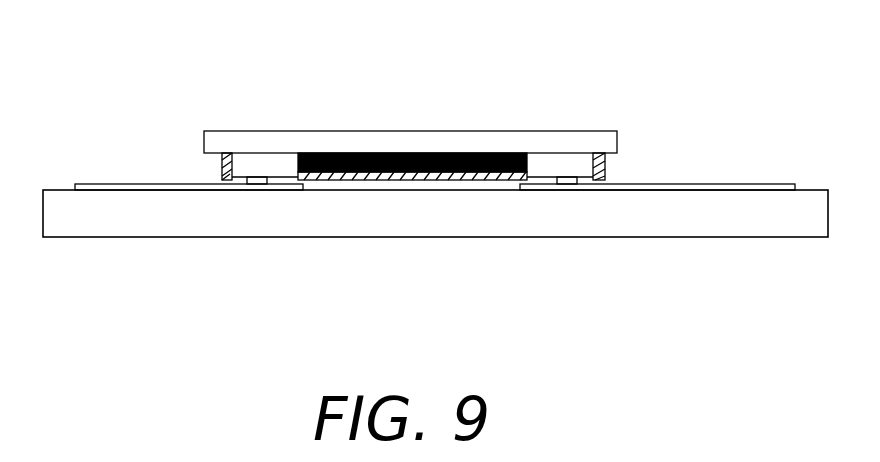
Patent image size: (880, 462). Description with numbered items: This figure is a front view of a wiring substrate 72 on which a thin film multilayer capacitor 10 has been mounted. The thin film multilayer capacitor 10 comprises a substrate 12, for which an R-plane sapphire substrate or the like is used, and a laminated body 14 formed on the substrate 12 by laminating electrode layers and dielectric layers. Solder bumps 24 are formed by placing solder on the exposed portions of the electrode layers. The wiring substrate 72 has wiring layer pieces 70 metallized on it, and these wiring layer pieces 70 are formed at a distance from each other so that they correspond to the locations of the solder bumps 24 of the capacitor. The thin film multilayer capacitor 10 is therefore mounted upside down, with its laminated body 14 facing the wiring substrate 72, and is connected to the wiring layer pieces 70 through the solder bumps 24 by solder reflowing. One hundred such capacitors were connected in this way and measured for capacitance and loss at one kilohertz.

The thin film multilayer capacitor 10 is at (428, 106).
The substrate 12 is at (465, 138).
The laminated body 14 is at (539, 162).
The solder bumps 24 is at (258, 177).
The wiring layer pieces 70 is at (100, 184).
The wiring substrate 72 is at (628, 222).